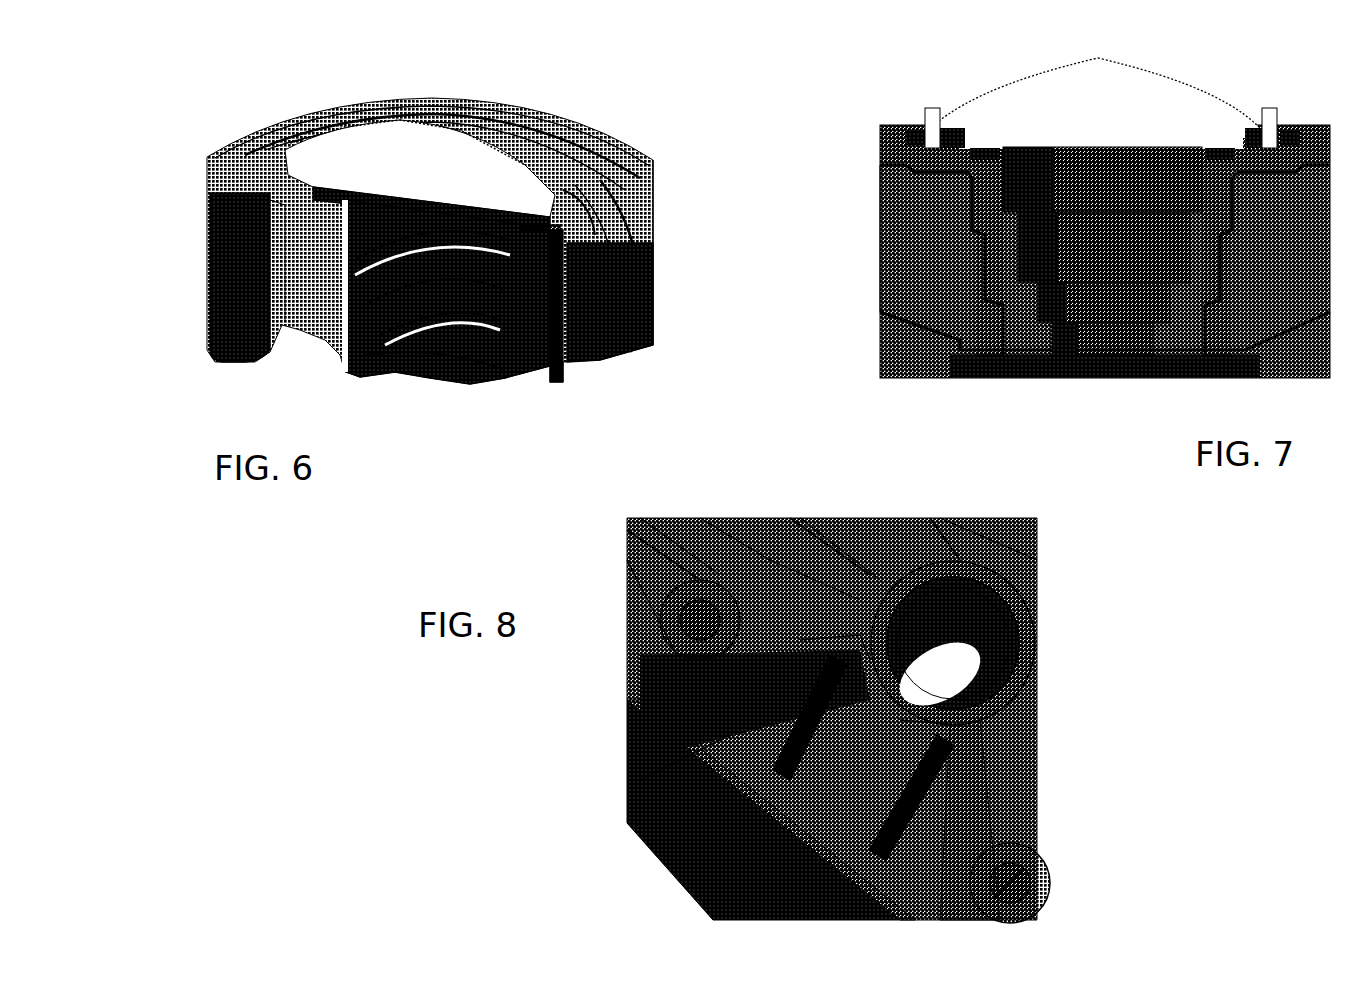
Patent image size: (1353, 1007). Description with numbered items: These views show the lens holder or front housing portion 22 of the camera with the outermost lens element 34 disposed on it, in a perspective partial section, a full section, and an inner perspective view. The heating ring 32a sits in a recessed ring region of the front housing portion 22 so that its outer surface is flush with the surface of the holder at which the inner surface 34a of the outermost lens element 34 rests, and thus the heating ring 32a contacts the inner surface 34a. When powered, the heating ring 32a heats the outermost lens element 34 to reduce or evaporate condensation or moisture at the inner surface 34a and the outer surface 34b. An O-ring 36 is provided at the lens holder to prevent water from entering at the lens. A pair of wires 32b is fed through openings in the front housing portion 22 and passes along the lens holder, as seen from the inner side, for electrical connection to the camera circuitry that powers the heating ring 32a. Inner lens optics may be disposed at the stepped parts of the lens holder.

In FIG. 6, the front housing portion 22 is at (660, 142).
In FIG. 7, the front housing portion 22 is at (870, 250).
In FIG. 8, the front housing portion 22 is at (1080, 742).
In FIG. 6, the heating ring 32a is at (323, 197).
In FIG. 7, the heating ring 32a is at (962, 140).
In FIG. 6, the wires 32b is at (547, 377).
In FIG. 8, the wires 32b is at (928, 740).
In FIG. 6, the outermost lens element 34 is at (515, 126).
In FIG. 7, the outermost lens element 34 is at (1145, 82).
In FIG. 6, the inner surface 34a is at (400, 197).
In FIG. 6, the outer surface 34b is at (465, 140).
In FIG. 6, the O-ring 36 is at (560, 232).